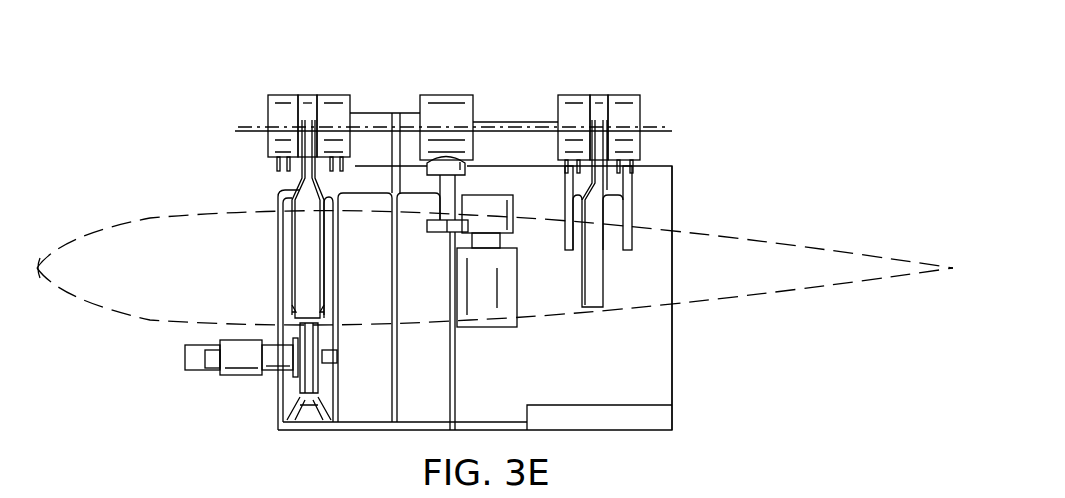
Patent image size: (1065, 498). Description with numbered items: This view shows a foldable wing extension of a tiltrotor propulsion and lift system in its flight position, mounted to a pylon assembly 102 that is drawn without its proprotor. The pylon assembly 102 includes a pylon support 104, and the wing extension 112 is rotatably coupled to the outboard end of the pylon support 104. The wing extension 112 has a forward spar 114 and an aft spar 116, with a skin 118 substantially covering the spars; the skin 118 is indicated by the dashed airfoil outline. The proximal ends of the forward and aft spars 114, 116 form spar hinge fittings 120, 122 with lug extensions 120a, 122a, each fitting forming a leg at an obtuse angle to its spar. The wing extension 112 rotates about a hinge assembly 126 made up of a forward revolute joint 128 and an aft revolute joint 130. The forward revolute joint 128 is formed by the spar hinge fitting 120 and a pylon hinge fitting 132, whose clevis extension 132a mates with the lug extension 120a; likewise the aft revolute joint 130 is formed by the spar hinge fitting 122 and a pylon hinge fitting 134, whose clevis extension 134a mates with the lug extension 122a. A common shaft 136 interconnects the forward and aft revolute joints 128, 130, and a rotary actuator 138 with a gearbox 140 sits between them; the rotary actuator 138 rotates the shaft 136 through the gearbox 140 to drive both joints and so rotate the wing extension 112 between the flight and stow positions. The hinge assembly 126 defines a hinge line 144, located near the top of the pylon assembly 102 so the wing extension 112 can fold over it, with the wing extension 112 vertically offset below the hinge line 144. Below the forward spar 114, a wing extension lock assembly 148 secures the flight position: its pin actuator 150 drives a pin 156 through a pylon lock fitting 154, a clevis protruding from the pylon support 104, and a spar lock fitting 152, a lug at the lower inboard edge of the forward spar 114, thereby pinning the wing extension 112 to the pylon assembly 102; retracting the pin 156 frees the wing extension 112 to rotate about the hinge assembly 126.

The pylon assembly 102 is at (673, 175).
The pylon support 104 is at (663, 385).
The wing extension 112 is at (495, 260).
The skin 118 is at (847, 222).
The forward spar 114 is at (290, 263).
The aft spar 116 is at (605, 292).
The spar hinge fitting 120 is at (349, 99).
The lug extension 120a is at (307, 126).
The spar hinge fitting 122 is at (613, 100).
The lug extension 122a is at (600, 95).
The hinge assembly 126 is at (292, 89).
The forward revolute joint 128 is at (268, 115).
The aft revolute joint 130 is at (665, 100).
The pylon hinge fitting 132 is at (268, 89).
The clevis extension 132a is at (290, 95).
The pylon hinge fitting 134 is at (673, 190).
The clevis extension 134a is at (640, 110).
The common shaft 136 is at (508, 118).
The rotary actuator 138 is at (487, 327).
The gearbox 140 is at (447, 93).
The hinge line 144 is at (245, 133).
The wing extension lock assembly 148 is at (199, 386).
The pin actuator 150 is at (253, 386).
The spar lock fitting 152 is at (308, 340).
The pylon lock fitting 154 is at (310, 407).
The pin 156 is at (327, 370).